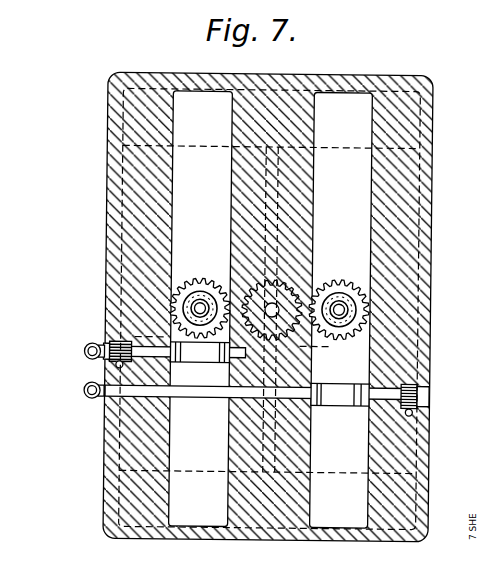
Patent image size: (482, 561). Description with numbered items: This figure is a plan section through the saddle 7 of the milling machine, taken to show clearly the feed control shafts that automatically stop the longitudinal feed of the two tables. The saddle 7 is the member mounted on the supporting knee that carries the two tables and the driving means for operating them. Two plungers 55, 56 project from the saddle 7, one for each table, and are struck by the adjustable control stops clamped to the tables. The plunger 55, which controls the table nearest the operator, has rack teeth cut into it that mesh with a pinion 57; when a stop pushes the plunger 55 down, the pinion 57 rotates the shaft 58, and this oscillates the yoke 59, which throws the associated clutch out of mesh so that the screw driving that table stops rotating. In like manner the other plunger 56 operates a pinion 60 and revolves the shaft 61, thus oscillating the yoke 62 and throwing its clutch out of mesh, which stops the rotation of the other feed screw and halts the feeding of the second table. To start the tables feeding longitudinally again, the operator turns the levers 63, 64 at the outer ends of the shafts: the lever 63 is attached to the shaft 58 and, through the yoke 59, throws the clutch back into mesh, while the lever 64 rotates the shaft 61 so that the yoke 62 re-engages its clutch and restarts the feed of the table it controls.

The saddle 7 is at (104, 437).
The plunger 55 is at (106, 366).
The plunger 56 is at (414, 413).
The pinion 57 is at (112, 343).
The shaft 58 is at (157, 338).
The yoke 59 is at (200, 341).
The pinion 60 is at (414, 385).
The shaft 61 is at (390, 400).
The yoke 62 is at (353, 383).
The lever 63 is at (96, 344).
The lever 64 is at (92, 400).